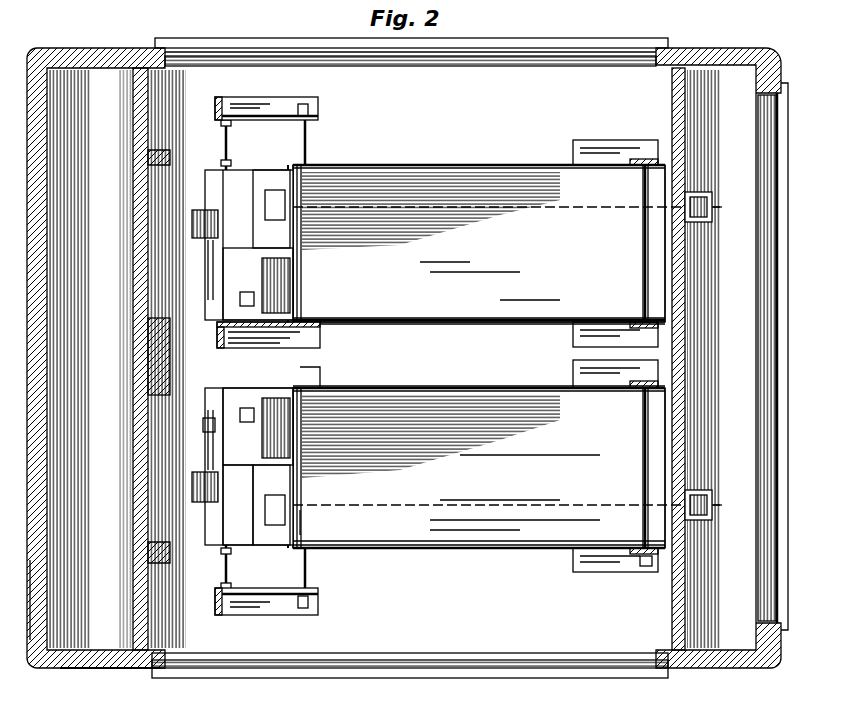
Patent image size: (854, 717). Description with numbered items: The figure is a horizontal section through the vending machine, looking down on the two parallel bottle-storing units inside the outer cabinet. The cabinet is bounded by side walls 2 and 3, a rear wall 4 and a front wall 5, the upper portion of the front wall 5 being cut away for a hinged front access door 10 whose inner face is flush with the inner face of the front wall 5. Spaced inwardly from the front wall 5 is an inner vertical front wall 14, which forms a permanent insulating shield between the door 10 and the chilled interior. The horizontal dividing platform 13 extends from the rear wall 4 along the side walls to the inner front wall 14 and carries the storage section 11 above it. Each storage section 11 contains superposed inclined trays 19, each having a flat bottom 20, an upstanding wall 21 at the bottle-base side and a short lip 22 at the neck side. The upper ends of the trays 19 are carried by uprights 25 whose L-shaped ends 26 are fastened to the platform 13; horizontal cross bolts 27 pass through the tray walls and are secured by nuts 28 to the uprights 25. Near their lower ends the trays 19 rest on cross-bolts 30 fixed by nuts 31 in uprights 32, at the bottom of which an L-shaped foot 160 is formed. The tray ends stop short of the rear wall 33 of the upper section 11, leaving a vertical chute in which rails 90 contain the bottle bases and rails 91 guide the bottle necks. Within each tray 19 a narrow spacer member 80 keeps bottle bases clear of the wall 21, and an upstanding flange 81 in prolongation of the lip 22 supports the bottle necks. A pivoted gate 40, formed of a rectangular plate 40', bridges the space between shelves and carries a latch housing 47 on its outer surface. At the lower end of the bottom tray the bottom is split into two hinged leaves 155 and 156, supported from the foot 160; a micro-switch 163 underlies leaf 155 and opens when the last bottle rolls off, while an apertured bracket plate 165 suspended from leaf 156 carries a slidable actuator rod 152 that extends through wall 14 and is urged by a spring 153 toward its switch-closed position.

The side wall 2 is at (138, 50).
The side wall 3 is at (92, 668).
The rear wall 4 is at (45, 615).
The front wall 5 is at (776, 655).
The front access door 10 is at (757, 595).
The storage section 11 is at (478, 114).
The dividing platform 13 is at (500, 627).
The inner vertical front wall 14 is at (672, 628).
The tray 19 is at (463, 304).
The tray bottom 20 is at (479, 356).
The upstanding wall 21 is at (512, 322).
The lip 22 is at (575, 170).
The upright 25 is at (628, 160).
The L-shaped end 26 is at (640, 330).
The cross bolt 27 is at (642, 255).
The nut 28 is at (642, 556).
The cross-bolt 30 is at (309, 140).
The nut 31 is at (300, 108).
The upright 32 is at (290, 122).
The rear wall of upper section 33 is at (133, 420).
The gate 40 is at (195, 357).
The gate plate 40' is at (238, 505).
The latch housing 47 is at (205, 420).
The spacer member 80 is at (368, 320).
The upstanding flange 81 is at (446, 165).
The vertical rail 90 is at (170, 388).
The vertical rail 91 is at (170, 548).
The actuator rod 152 is at (530, 213).
The spring 153 is at (705, 495).
The hinged leaf 155 is at (258, 356).
The hinged leaf 156 is at (271, 357).
The L-shaped foot 160 is at (321, 370).
The micro-switch 163 is at (250, 292).
The bracket plate 165 is at (306, 522).